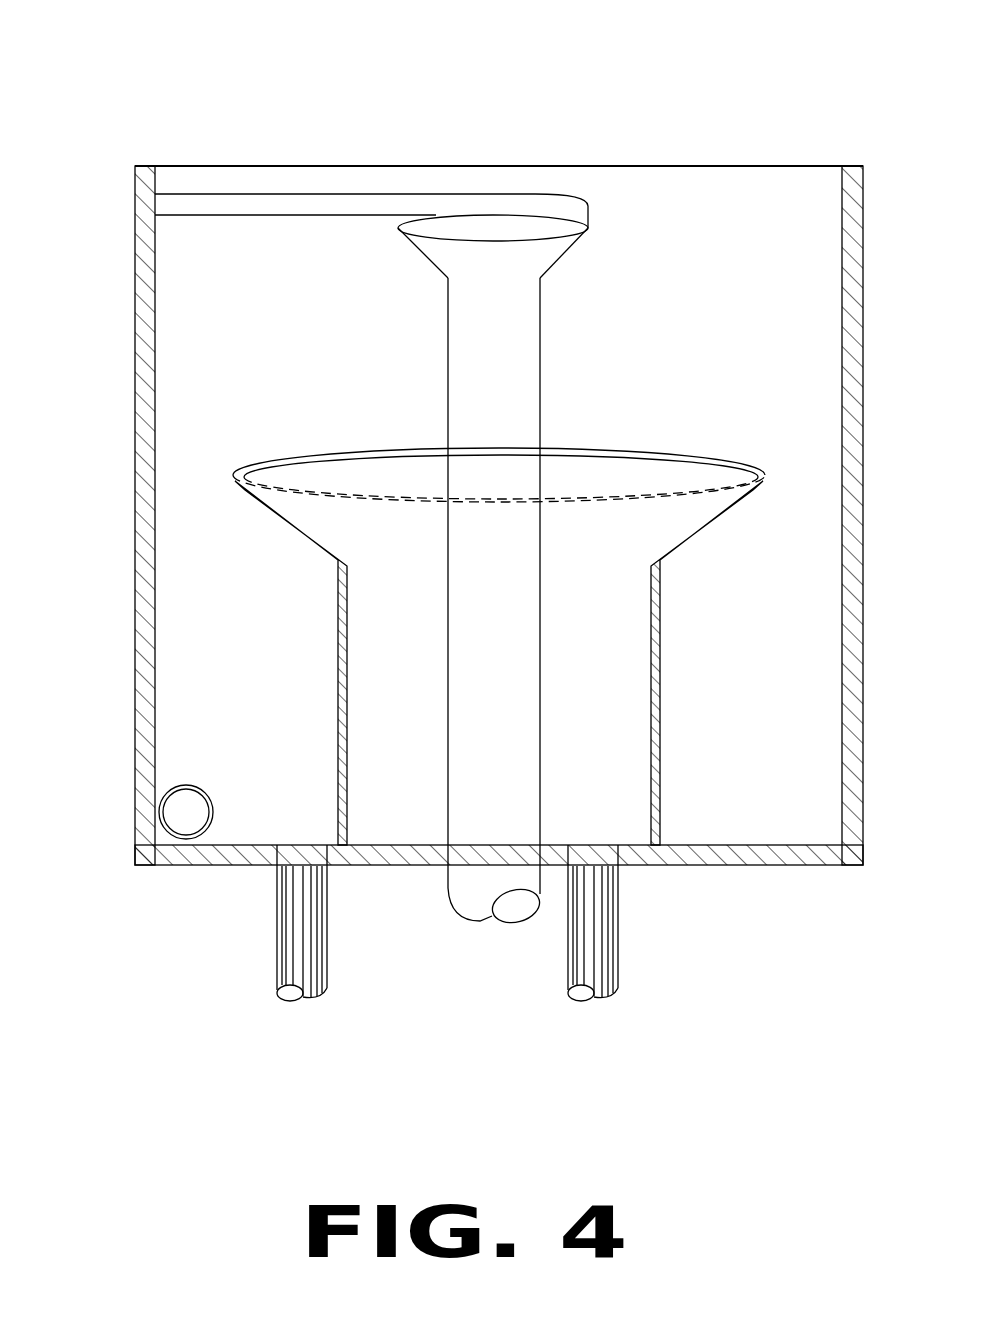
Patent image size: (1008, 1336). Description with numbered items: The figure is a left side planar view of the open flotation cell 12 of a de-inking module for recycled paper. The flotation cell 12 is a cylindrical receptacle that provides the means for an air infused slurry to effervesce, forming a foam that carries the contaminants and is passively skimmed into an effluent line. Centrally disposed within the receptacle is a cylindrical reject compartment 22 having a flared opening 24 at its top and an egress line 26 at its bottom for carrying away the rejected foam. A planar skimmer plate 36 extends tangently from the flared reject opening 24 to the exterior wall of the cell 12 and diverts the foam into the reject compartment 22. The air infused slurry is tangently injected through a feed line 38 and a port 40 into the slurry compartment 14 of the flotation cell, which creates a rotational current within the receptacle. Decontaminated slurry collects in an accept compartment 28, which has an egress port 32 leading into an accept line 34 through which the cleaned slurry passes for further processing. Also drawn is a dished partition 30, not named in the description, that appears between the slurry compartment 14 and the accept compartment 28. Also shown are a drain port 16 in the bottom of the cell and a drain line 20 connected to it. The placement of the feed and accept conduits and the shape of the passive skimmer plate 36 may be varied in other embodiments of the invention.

The flotation cell 12 is at (140, 118).
The slurry compartment 14 is at (258, 640).
The drain port 16 is at (303, 845).
The drain line 20 is at (278, 923).
The reject compartment 22 is at (526, 348).
The flared opening 24 is at (396, 224).
The egress line 26 is at (470, 922).
The accept compartment 28 is at (430, 738).
The conical baffle 30 is at (291, 452).
The egress port 32 is at (596, 845).
The accept line 34 is at (620, 920).
The skimmer plate 36 is at (228, 205).
The feed line 38 is at (163, 795).
The port 40 is at (183, 813).